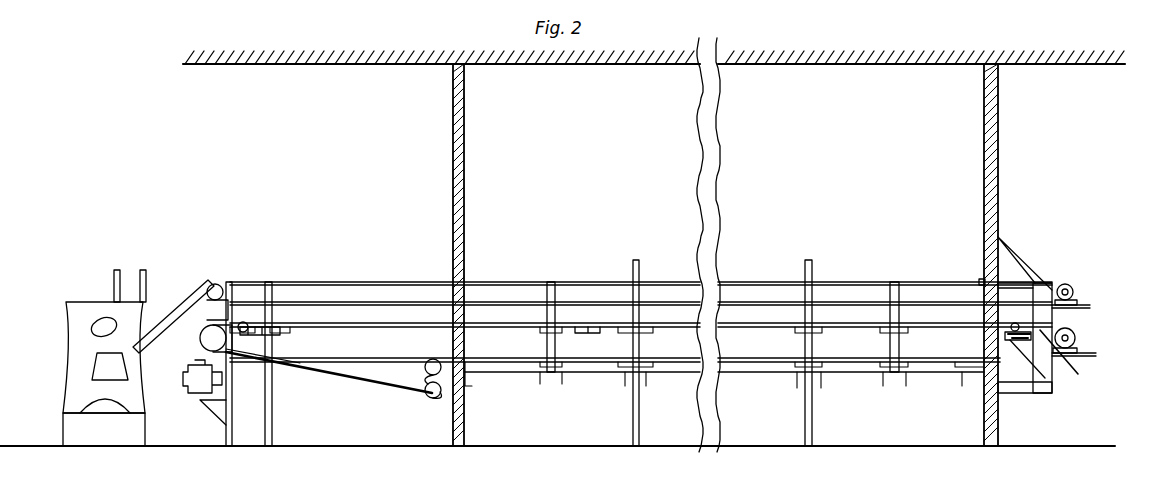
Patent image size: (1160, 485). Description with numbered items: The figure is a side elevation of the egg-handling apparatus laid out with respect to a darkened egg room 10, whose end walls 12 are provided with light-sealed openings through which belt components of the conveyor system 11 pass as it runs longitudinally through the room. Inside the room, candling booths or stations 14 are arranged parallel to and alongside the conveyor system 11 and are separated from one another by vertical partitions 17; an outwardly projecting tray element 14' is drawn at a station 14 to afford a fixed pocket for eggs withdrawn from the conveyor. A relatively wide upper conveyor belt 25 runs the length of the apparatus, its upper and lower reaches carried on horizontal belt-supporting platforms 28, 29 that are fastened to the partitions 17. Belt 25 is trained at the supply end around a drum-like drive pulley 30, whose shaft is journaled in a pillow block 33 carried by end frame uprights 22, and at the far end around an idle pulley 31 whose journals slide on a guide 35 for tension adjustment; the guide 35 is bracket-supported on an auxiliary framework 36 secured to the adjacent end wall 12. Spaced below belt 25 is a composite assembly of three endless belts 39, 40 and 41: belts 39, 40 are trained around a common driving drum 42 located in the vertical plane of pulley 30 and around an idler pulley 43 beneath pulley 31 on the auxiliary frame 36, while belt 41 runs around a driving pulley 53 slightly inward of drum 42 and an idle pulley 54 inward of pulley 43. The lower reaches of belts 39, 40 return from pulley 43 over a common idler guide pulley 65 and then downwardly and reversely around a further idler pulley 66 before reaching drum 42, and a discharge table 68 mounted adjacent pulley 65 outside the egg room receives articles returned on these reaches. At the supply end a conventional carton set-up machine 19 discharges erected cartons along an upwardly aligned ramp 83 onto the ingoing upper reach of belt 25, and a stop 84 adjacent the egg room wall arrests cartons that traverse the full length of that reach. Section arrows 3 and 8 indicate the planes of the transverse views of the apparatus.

The egg room 10 is at (654, 95).
The end walls 12 is at (466, 190).
The belt-supporting platform 28 is at (387, 281).
The belt-supporting platform 29 is at (586, 301).
The driving pulley 53 is at (247, 323).
The vertical partitions 17 is at (641, 410).
The candling stations 14 is at (837, 367).
The bracket 14' is at (592, 341).
The section line 8 is at (540, 249).
The conveyor system 11 is at (745, 274).
The stop 84 is at (980, 280).
The carton set-up machine 19 is at (56, 337).
The ramp 83 is at (163, 318).
The drum-like pulley 30 is at (215, 283).
The pillow block 33 is at (205, 289).
The upper conveyor belt 25 is at (231, 283).
The section line 3 is at (195, 298).
The driving pulley 42 is at (200, 340).
The end frame uprights 22 is at (226, 426).
The flexible endless belt 40 is at (394, 386).
The discharge table 68 is at (337, 366).
The idler guide pulley 65 is at (435, 356).
The idler pulley 66 is at (433, 398).
The auxiliary framework 36 is at (1030, 393).
The idle pulley 31 is at (1073, 289).
The guide 35 is at (1072, 304).
The idler pulley 43 is at (1076, 338).
The idle pulley 54 is at (1017, 323).
The flexible endless belt 39 is at (1030, 330).
The flexible endless belt 41 is at (997, 315).